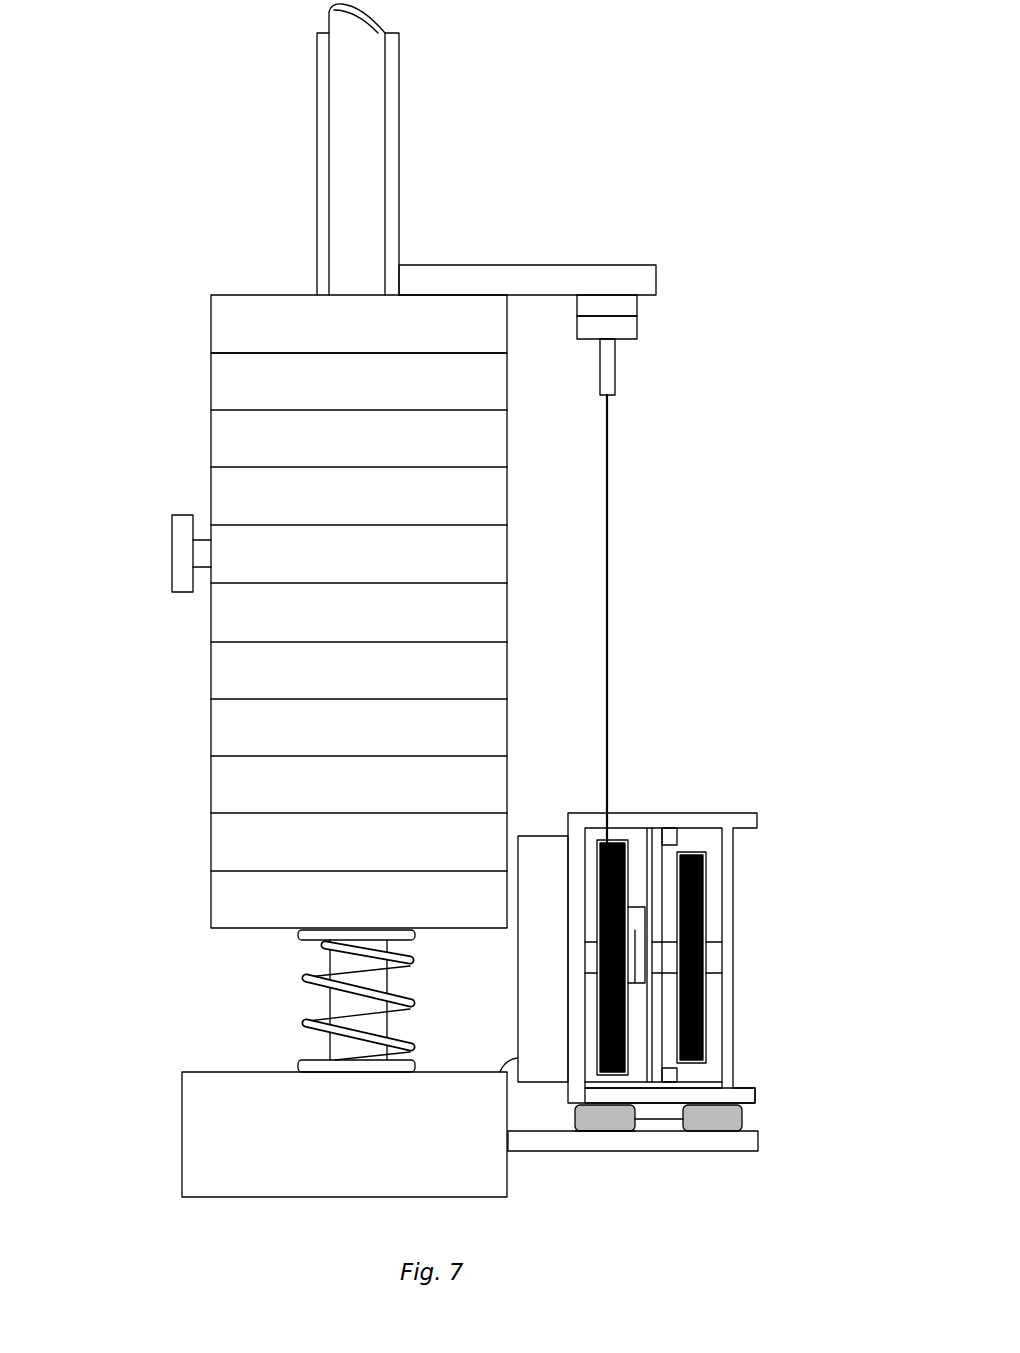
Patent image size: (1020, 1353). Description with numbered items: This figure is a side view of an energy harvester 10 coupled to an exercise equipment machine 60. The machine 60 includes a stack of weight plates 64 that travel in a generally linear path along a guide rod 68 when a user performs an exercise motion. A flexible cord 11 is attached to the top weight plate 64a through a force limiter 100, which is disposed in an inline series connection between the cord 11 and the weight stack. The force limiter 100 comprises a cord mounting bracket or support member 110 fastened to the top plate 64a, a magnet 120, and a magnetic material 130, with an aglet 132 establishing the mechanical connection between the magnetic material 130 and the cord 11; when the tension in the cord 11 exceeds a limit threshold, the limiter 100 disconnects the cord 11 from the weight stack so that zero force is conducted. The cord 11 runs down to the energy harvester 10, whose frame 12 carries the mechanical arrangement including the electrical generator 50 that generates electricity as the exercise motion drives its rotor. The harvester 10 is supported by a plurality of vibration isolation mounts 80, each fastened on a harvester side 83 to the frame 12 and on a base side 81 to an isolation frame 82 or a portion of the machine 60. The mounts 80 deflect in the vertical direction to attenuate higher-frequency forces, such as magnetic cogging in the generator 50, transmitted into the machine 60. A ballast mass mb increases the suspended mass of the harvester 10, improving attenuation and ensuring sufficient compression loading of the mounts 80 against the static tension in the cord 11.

The exercise equipment machine 60 is at (168, 210).
The guide rod 68 is at (360, 175).
The top weight plate 64a is at (232, 330).
The weight plates 64 is at (227, 731).
The cord mounting bracket 110 is at (628, 275).
The force limiter 100 is at (644, 350).
The magnet 120 is at (632, 310).
The magnetic material 130 is at (632, 325).
The aglet 132 is at (608, 378).
The flexible cord 11 is at (607, 603).
The energy harvester 10 is at (703, 808).
The electrical generator 50 is at (551, 1063).
The frame 12 is at (730, 873).
The harvester side 83 is at (727, 1100).
The vibration isolation mounts 80 is at (742, 1120).
The base side 81 is at (585, 1132).
The ballast mass mb is at (665, 1115).
The isolation frame 82 is at (745, 1140).